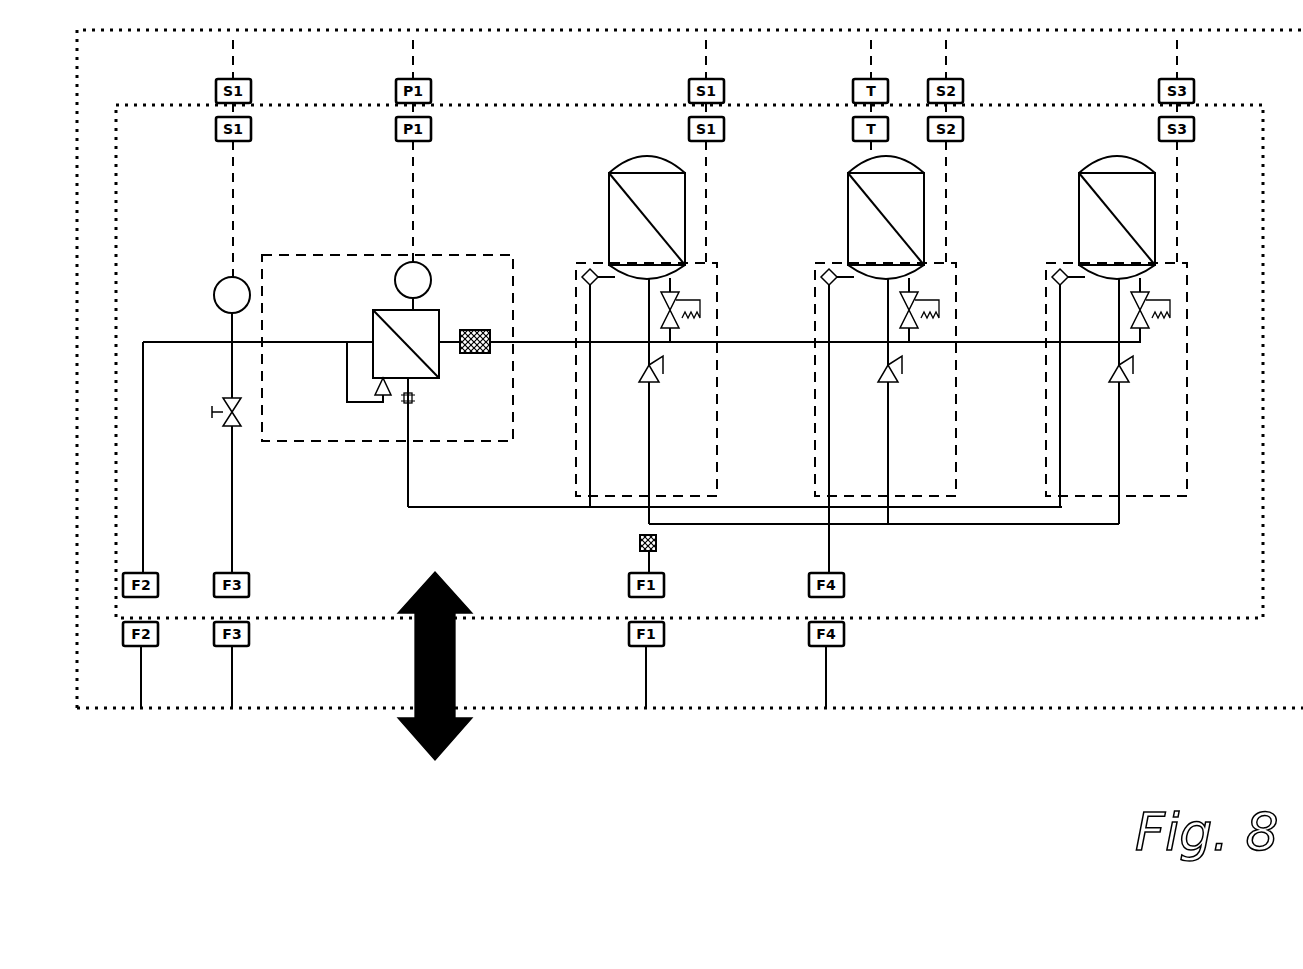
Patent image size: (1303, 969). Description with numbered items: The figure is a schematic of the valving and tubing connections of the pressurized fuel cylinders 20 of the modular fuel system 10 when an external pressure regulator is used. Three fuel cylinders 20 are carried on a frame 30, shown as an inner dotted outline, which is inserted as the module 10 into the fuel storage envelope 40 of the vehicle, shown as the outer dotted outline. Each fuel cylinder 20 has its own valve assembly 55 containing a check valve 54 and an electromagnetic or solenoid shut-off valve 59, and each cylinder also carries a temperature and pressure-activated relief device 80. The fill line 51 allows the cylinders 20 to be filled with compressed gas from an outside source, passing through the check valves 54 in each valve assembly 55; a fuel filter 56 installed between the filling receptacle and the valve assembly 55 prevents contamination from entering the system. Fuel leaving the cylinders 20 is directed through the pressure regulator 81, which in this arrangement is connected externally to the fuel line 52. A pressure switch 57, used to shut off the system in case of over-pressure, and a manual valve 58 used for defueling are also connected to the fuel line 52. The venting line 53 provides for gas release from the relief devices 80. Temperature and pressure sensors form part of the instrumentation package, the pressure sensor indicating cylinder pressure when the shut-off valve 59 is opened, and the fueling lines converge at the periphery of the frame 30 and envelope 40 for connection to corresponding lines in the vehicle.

The pressurized fuel cylinder 20 is at (609, 195).
The pressure relief device 80 is at (586, 270).
The pressure switch 57 is at (222, 281).
The manual valve 58 is at (224, 404).
The fuel line 52 is at (144, 488).
The pressure regulator 81 is at (428, 358).
The solenoid shut-off valve 59 is at (680, 298).
The check valve 54 is at (660, 380).
The valve assembly 55 is at (815, 455).
The fuel filter 56 is at (636, 542).
The fill line 51 is at (650, 553).
The venting line 53 is at (832, 530).
The fuel storage envelope 40 is at (903, 708).
The frame 30 is at (689, 468).
The modular fuel system 10 is at (1040, 620).